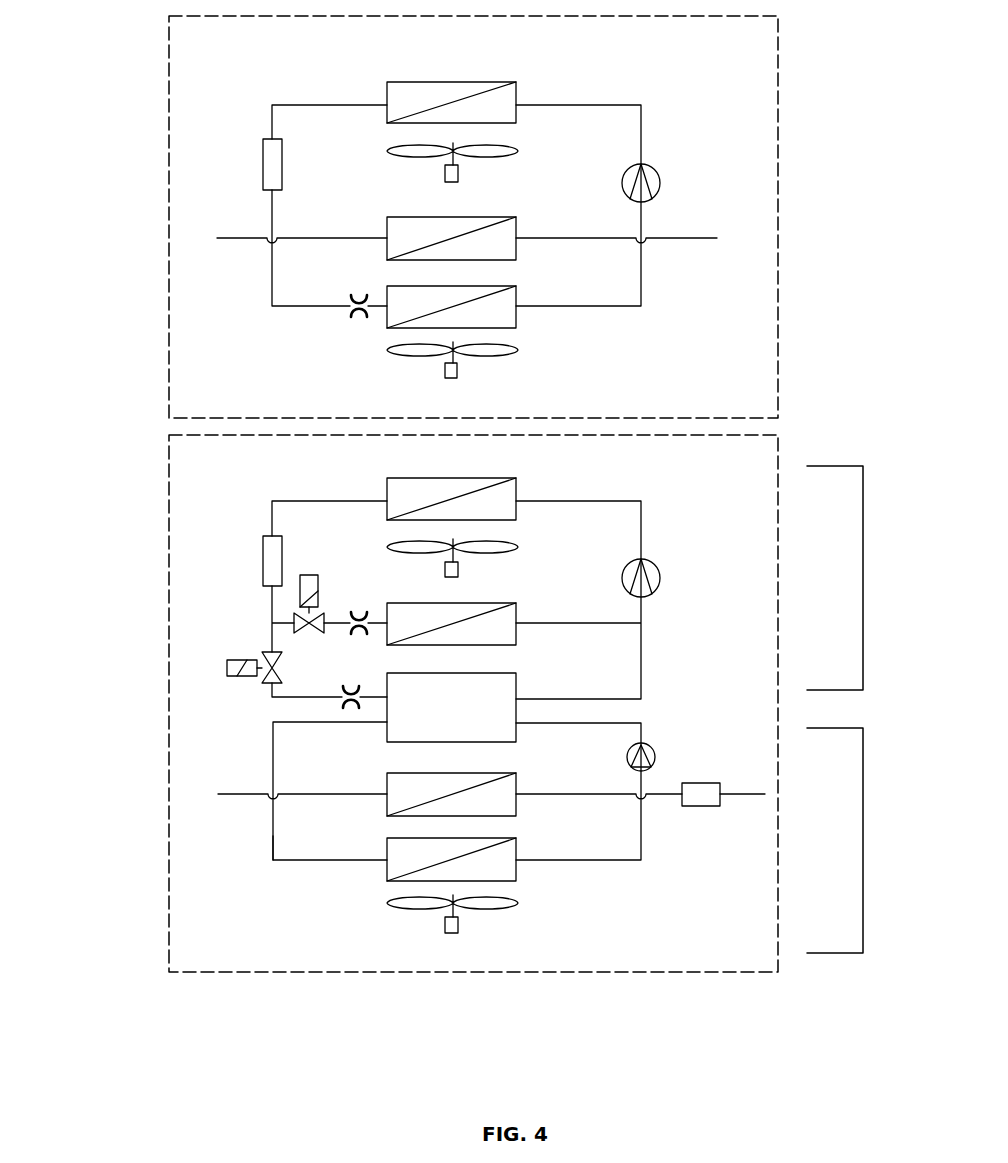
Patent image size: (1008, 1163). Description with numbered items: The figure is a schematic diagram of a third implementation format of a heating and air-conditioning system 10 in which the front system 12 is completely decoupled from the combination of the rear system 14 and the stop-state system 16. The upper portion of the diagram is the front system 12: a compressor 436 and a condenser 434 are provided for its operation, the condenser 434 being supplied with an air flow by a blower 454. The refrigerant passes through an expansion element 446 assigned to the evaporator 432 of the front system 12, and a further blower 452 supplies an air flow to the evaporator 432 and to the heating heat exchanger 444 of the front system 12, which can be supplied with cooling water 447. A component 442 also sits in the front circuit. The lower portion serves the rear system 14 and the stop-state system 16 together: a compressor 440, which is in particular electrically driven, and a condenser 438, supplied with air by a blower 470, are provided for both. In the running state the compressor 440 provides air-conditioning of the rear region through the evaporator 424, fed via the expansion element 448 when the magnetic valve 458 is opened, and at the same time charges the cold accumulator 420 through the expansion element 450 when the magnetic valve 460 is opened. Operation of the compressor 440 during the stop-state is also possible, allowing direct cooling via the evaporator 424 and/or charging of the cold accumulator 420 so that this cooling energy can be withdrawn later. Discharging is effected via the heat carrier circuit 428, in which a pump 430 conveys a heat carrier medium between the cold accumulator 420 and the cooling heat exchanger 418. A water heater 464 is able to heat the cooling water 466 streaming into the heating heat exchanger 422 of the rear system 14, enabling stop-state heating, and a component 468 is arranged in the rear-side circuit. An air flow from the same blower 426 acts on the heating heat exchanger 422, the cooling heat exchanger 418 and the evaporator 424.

The heating and air-conditioning system 10 is at (140, 88).
The front system 12 is at (778, 192).
The rear system 14 is at (863, 582).
The stop-state system 16 is at (863, 868).
The cooling heat exchanger 418 is at (516, 848).
The cold accumulator 420 is at (516, 688).
The heating heat exchanger 422 is at (516, 780).
The evaporator 424 is at (516, 612).
The blower 426 is at (458, 925).
The heat carrier circuit 428 is at (273, 836).
The pump 430 is at (651, 746).
The evaporator 432 is at (510, 318).
The condenser 434 is at (460, 82).
The compressor 436 is at (655, 172).
The condenser 438 is at (465, 478).
The compressor 440 is at (655, 567).
The heater 442 is at (263, 160).
The heating heat exchanger 444 is at (410, 217).
The expansion element 446 is at (355, 318).
The cooling water 447 is at (673, 250).
The expansion element 448 is at (359, 612).
The expansion element 450 is at (351, 686).
The blower 452 is at (457, 371).
The blower 454 is at (458, 172).
The magnetic valve 458 is at (309, 575).
The magnetic valve 460 is at (230, 660).
The water heater 464 is at (700, 806).
The cooling water 466 is at (732, 813).
The heater 468 is at (263, 556).
The blower 470 is at (458, 570).